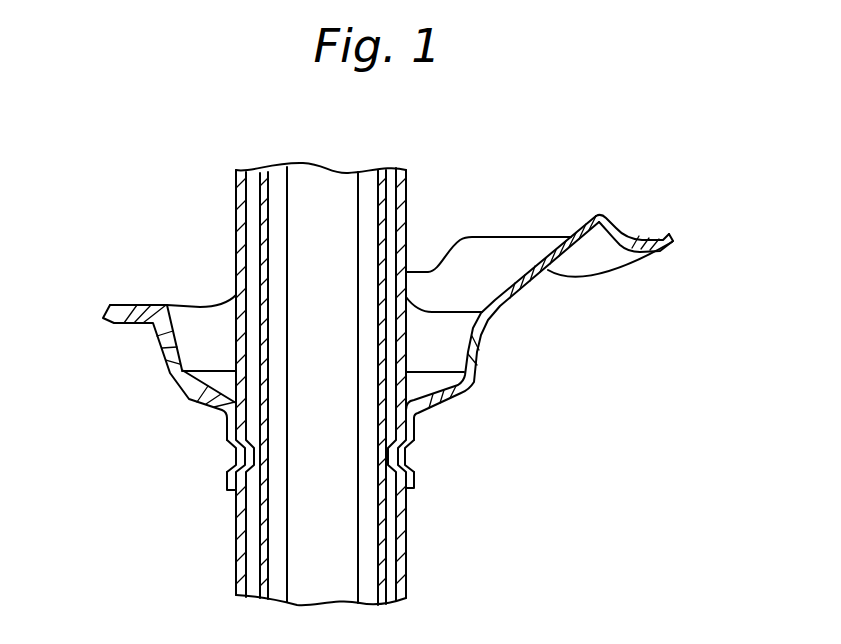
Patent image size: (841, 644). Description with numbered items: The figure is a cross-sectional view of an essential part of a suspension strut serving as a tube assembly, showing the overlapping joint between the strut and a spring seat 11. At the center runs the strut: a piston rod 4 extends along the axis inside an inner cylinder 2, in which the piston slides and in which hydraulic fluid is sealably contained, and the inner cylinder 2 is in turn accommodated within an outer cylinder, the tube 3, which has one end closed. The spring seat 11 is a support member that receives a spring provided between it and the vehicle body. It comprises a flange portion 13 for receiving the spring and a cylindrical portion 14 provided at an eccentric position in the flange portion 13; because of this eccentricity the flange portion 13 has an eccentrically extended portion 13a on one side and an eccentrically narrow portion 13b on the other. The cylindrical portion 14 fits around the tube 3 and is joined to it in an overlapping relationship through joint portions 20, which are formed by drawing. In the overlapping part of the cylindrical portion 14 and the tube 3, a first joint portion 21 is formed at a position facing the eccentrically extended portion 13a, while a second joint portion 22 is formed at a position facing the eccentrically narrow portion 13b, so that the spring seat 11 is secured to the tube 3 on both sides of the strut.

The inner cylinder 2 is at (384, 173).
The outer cylinder (tube) 3 is at (236, 213).
The piston rod 4 is at (318, 185).
The spring seat 11 is at (629, 231).
The flange portion 13 is at (497, 253).
The eccentrically extended portion 13a is at (531, 300).
The eccentrically narrow portion 13b is at (170, 373).
The cylindrical portion 14 is at (228, 474).
The joint portions 20 is at (321, 452).
The first joint portion 21 is at (408, 458).
The second joint portion 22 is at (236, 455).